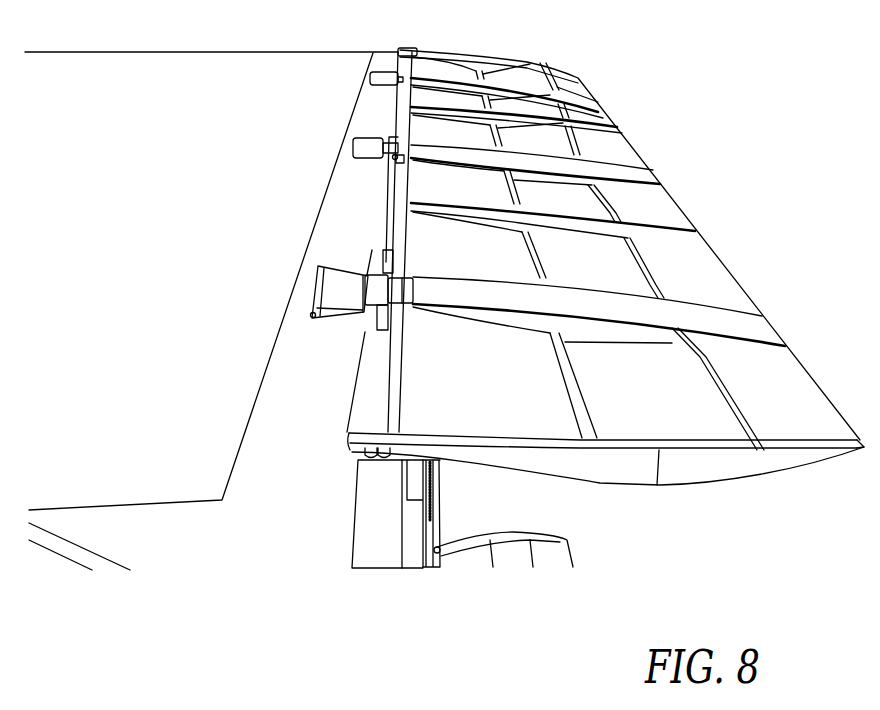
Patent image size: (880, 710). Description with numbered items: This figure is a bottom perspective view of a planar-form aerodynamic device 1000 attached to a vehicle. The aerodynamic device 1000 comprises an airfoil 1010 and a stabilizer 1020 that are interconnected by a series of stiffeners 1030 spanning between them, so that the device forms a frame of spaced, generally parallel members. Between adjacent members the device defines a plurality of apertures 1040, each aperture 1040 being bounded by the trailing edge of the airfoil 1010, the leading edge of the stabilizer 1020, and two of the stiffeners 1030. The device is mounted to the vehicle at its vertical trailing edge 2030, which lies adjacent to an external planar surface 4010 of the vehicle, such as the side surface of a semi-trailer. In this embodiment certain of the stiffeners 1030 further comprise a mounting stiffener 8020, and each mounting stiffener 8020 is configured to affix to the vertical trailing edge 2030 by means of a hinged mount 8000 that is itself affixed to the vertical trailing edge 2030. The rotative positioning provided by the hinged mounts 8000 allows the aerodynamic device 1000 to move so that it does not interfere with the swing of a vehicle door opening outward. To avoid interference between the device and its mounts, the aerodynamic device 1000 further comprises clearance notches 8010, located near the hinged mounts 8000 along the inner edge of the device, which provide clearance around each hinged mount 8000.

The aerodynamic device 1000 is at (777, 78).
The airfoil 1010 is at (513, 420).
The stabilizer 1020 is at (794, 382).
The stiffener 1030 is at (624, 127).
The aperture 1040 is at (510, 254).
The vertical trailing edge 2030 is at (342, 583).
The external planar surface 4010 is at (211, 311).
The hinged mount 8000 is at (368, 80).
The clearance notch 8010 is at (384, 165).
The mounting stiffener 8020 is at (597, 91).